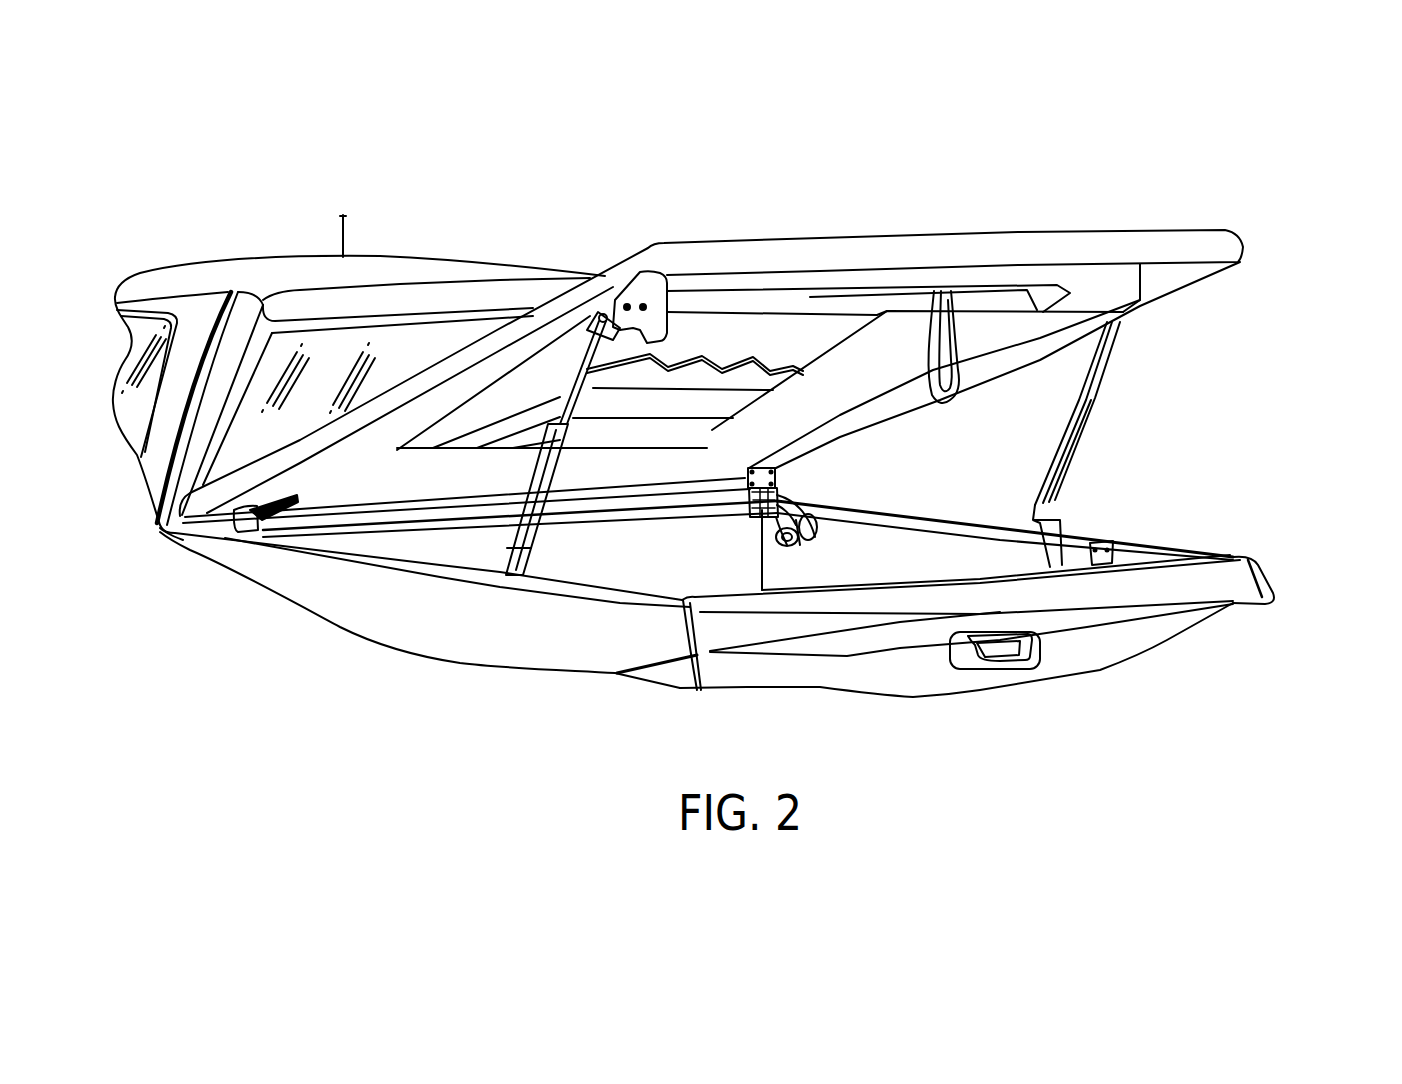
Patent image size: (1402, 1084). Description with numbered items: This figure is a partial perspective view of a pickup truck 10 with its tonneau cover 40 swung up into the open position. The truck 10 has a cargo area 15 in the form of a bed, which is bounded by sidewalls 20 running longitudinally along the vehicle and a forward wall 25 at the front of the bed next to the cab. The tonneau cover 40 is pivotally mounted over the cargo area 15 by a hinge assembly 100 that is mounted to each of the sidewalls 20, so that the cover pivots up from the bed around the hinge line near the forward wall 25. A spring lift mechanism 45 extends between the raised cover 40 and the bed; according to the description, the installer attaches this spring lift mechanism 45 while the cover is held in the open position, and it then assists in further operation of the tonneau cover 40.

The pickup truck 10 is at (160, 215).
The cargo area 15 is at (1263, 522).
The sidewalls 20 is at (937, 550).
The forward wall 25 is at (590, 562).
The tonneau cover 40 is at (1203, 255).
The spring lift mechanism 45 is at (1073, 457).
The hinge assembly 100 is at (803, 491).